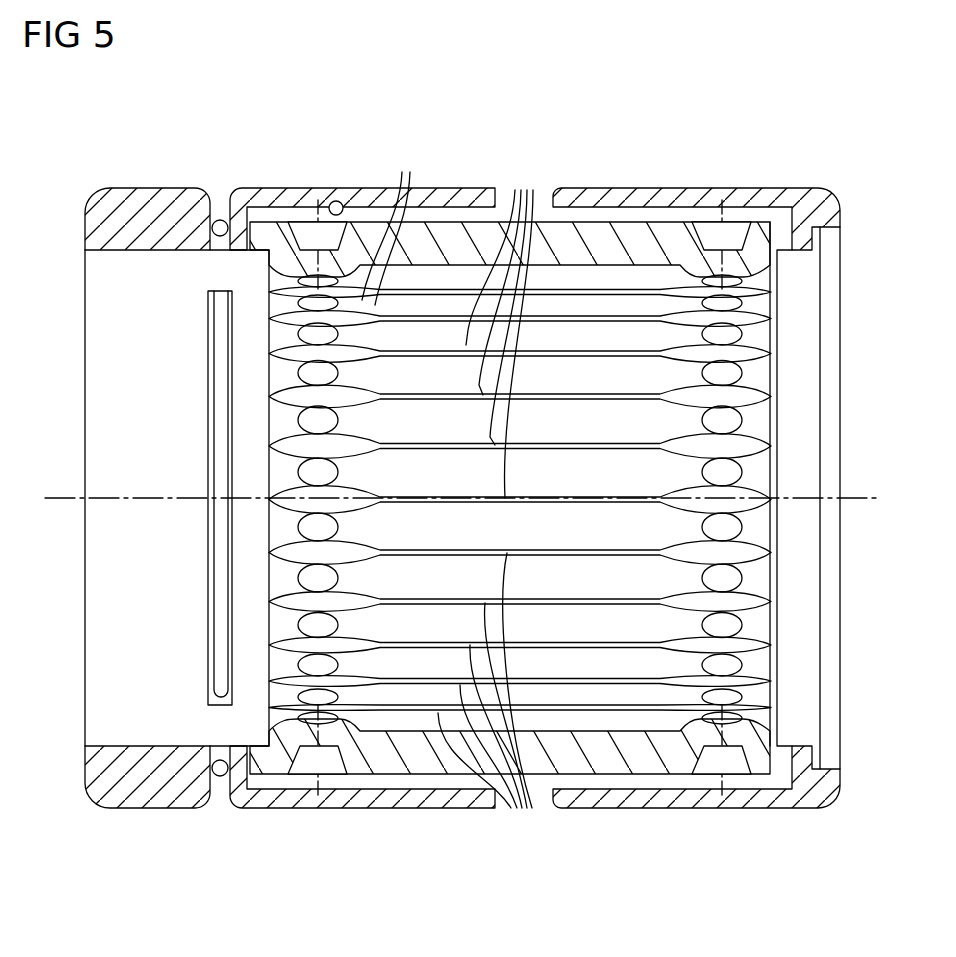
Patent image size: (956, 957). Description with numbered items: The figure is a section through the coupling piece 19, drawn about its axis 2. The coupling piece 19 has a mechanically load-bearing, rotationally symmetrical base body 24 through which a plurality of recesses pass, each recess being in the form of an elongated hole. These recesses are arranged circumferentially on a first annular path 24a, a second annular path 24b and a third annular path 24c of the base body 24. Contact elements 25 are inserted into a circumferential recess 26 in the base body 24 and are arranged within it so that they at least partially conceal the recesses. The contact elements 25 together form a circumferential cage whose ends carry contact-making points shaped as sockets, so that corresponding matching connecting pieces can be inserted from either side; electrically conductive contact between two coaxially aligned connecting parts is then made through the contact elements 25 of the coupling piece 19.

The axis of rotation 2 is at (65, 496).
The coupling piece 19 is at (597, 139).
The base body 24 is at (746, 188).
The first annular path 24a is at (395, 818).
The second annular path 24b is at (540, 832).
The third annular path 24c is at (642, 820).
The contact elements 25 is at (453, 493).
The circumferential recess 26 is at (336, 201).